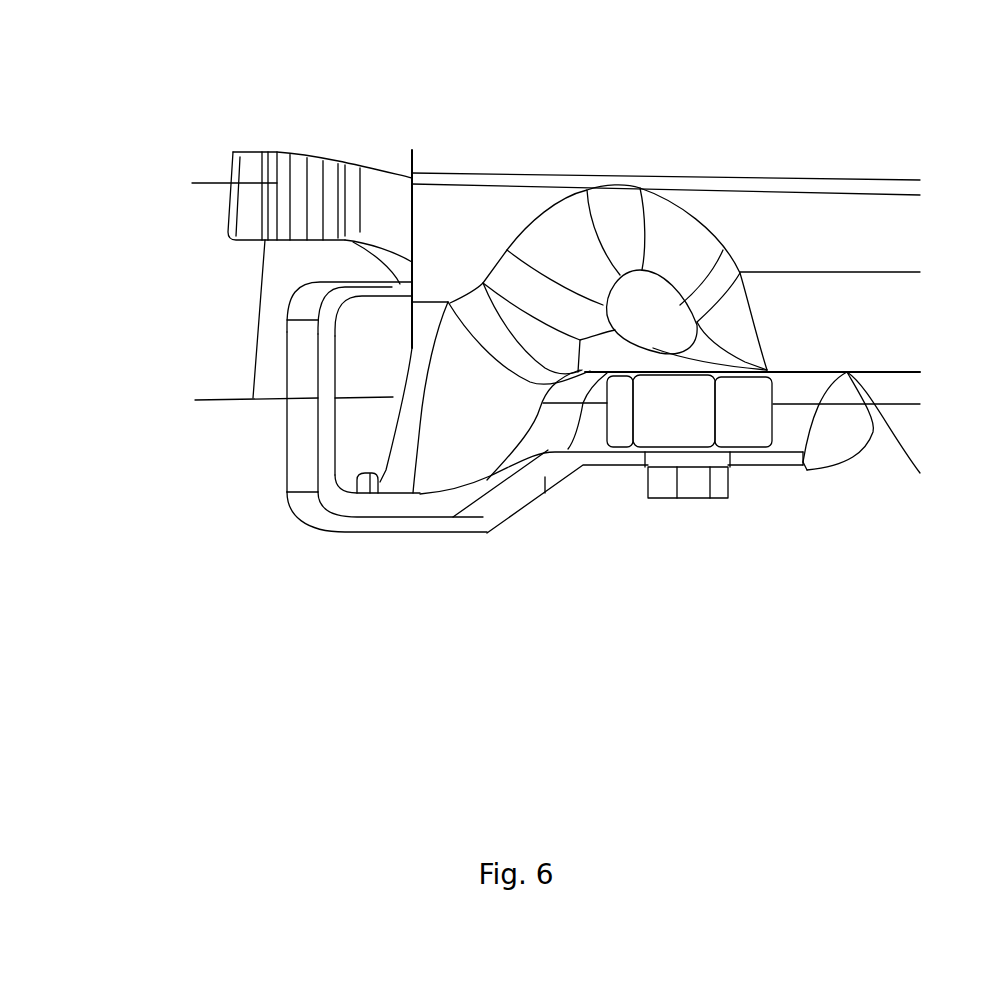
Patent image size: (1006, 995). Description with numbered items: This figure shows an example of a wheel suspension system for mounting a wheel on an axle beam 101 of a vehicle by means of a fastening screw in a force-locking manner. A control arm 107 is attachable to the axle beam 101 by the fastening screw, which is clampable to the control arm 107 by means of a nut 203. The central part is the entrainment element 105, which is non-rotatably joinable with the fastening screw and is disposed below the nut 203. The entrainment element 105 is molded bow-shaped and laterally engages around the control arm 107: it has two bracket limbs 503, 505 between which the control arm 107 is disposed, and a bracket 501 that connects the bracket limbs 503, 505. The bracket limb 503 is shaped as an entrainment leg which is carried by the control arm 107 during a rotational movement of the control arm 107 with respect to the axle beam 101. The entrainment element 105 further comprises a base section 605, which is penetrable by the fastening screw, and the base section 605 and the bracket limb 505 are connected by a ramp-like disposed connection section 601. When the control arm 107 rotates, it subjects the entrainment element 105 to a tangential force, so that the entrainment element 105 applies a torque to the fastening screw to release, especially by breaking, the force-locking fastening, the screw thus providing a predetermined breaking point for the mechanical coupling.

The axle beam 101 is at (367, 205).
The control arm 107 is at (833, 245).
The entrainment element 105 is at (300, 542).
The bracket 501 is at (300, 375).
The bracket limb 503 is at (392, 285).
The bracket limb 505 is at (407, 525).
The connection section 601 is at (527, 494).
The nut 203 is at (713, 487).
The base section 605 is at (773, 457).